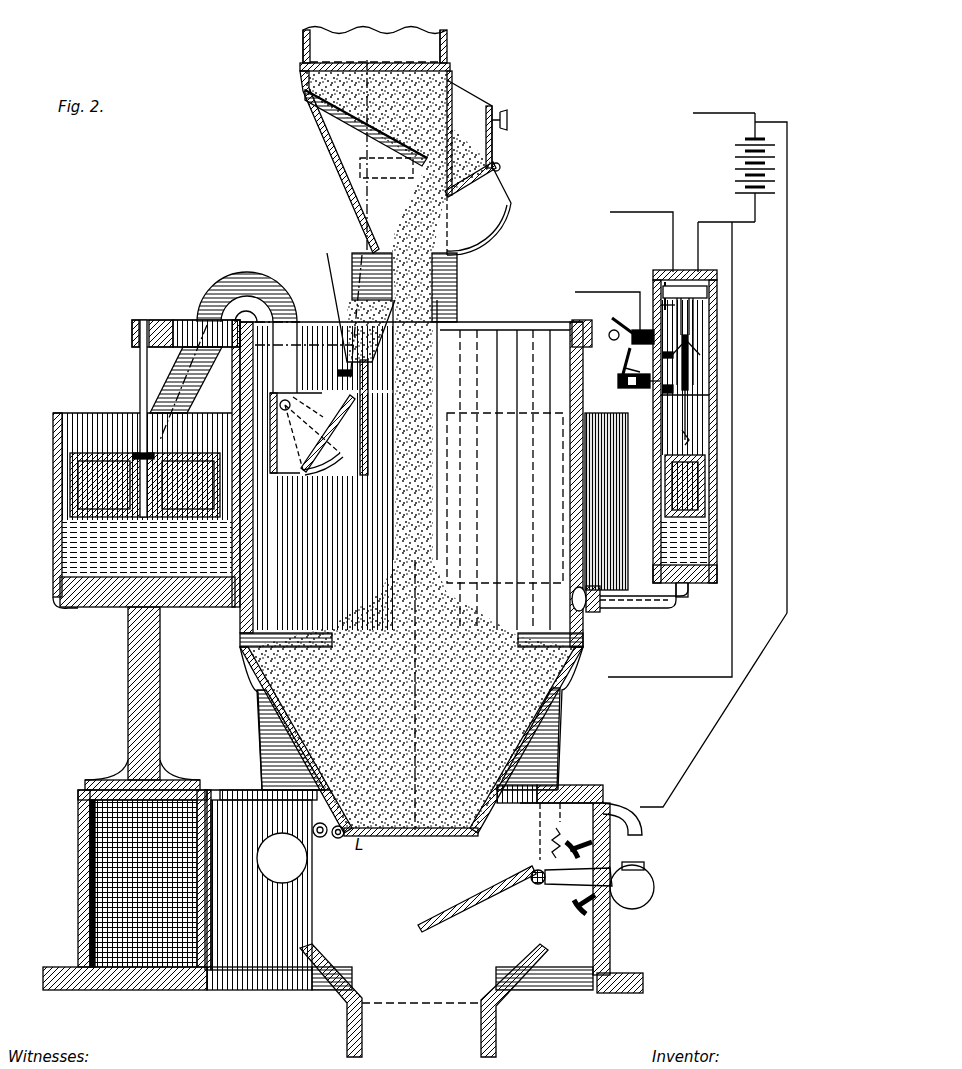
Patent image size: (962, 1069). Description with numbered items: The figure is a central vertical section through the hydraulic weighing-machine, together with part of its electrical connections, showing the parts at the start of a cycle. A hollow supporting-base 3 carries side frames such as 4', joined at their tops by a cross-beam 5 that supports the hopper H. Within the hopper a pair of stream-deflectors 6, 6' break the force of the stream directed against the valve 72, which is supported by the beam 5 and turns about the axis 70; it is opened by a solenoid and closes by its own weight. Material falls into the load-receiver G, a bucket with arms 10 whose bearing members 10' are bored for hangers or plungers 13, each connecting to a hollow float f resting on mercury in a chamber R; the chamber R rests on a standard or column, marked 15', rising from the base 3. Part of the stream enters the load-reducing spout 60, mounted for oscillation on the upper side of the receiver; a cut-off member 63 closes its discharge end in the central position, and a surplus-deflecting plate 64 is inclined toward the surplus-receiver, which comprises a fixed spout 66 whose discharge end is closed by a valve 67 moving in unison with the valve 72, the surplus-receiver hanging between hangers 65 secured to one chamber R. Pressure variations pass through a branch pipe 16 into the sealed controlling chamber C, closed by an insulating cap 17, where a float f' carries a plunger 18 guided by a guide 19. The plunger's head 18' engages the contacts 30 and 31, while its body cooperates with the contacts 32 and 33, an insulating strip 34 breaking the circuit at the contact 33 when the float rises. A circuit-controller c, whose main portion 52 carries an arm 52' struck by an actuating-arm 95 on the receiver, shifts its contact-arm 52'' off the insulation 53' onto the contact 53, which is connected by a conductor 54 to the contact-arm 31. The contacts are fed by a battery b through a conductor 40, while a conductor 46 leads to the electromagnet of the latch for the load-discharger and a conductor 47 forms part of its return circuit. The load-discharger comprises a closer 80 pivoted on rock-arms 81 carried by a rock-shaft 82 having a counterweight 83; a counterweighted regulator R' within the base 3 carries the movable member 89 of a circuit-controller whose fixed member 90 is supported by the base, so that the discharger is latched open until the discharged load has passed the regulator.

The hopper H is at (304, 89).
The cross-beam 5 is at (358, 170).
The stream-deflector 6 is at (360, 128).
The axis of movement of the valve 70 is at (440, 110).
The stream-deflector 6' is at (483, 179).
The valve 72 is at (497, 205).
The side frame 4' is at (458, 287).
The load-reducing spout 60 is at (361, 316).
The overreaching arms or hangers 65 is at (231, 290).
The arm 10 is at (186, 366).
The bearing member 10' is at (167, 333).
The hanger or plunger 13 is at (140, 371).
The fluid-containing chamber R is at (131, 464).
The load-receiver-supporting float f is at (145, 472).
The support stem 15' is at (143, 698).
The hollow supporting-base 3 is at (215, 792).
The counterweight 83 is at (267, 890).
The rock-shaft 82 is at (314, 826).
The rock-arm 81 is at (338, 839).
The load-receiver G is at (416, 473).
The cut-off member 63 is at (355, 372).
The surplus-deflecting plate 64 is at (338, 374).
The fixed spout of the surplus-receiver 66 is at (312, 433).
The valve of the surplus-receiver 67 is at (363, 473).
The closer proper 80 is at (421, 832).
The regulator R' is at (477, 899).
The movable member of circuit-controller 89 is at (568, 893).
The fixed member of circuit-controller 90 is at (552, 857).
The actuating-arm 95 is at (602, 322).
The circuit-controller c is at (614, 333).
The lever arm 52 is at (631, 316).
The arm of circuit-controller 52' is at (607, 362).
The contact-arm 52'' is at (613, 371).
The insulation 53' is at (619, 386).
The contact member 53 is at (638, 384).
The contact member 33 is at (655, 382).
The controlling or pressure-balancing chamber C is at (691, 411).
The cap 17 is at (700, 272).
The contact 30 is at (672, 290).
The contact 31 is at (665, 308).
The contact 32 is at (697, 300).
The head of plunger 18' is at (718, 313).
The conductor 54 is at (690, 345).
The strip of insulating material 34 is at (690, 372).
The guide 19 is at (695, 388).
The plunger or rod 18 is at (719, 417).
The float f' is at (709, 486).
The branch pipe 16 is at (661, 608).
The battery b is at (742, 167).
The conductor 40 is at (706, 113).
The conductor 46 is at (787, 560).
The conductor 47 is at (732, 628).